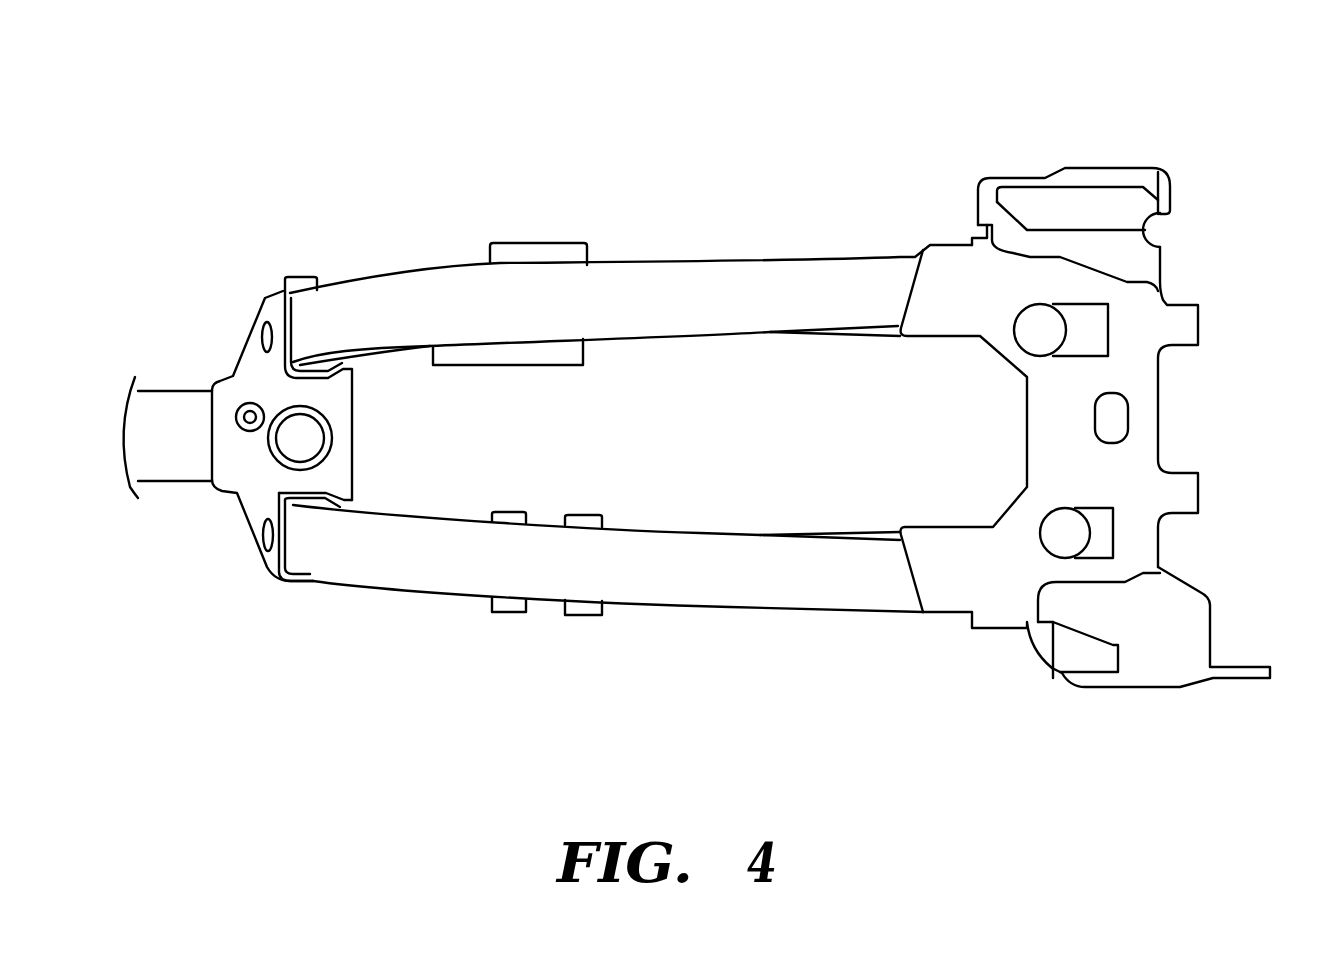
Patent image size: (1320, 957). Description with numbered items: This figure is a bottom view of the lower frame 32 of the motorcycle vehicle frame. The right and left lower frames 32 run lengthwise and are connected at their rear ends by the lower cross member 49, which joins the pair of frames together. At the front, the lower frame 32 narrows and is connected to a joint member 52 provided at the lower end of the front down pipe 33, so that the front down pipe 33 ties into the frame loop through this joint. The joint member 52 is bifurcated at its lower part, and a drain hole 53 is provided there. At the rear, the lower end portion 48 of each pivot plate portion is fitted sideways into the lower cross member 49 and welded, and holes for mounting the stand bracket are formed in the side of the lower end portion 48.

The lower frame 32 is at (662, 277).
The front down pipe 33 is at (177, 405).
The lower end portion 48 is at (1097, 178).
The lower cross member 49 is at (1147, 418).
The joint member 52 is at (235, 493).
The drain hole 53 is at (318, 442).